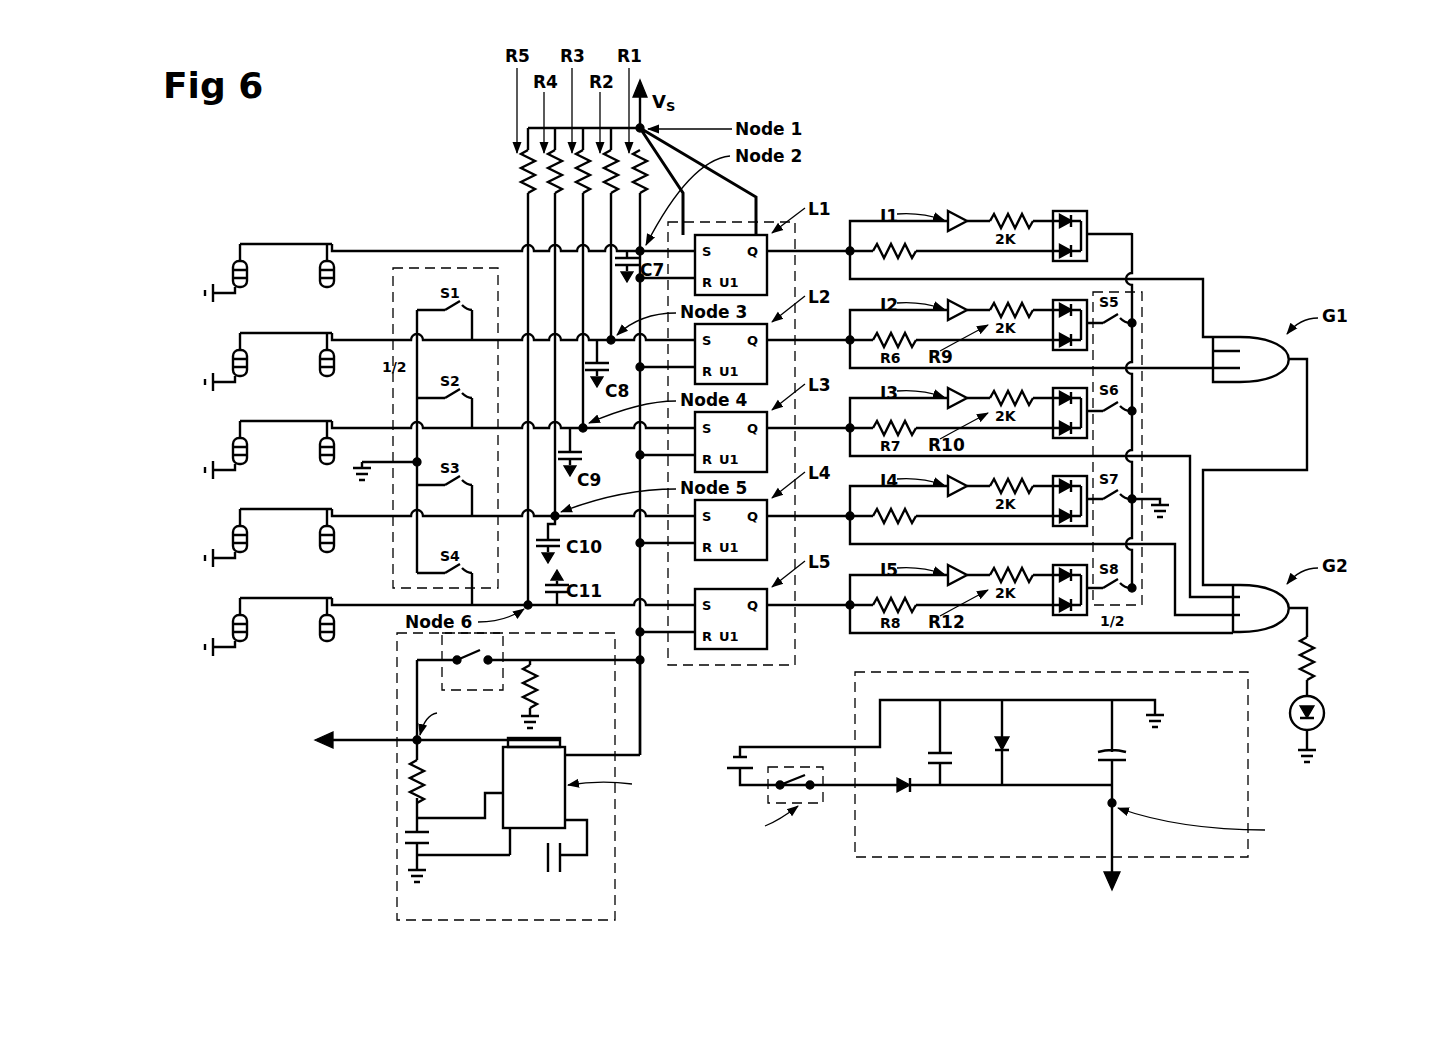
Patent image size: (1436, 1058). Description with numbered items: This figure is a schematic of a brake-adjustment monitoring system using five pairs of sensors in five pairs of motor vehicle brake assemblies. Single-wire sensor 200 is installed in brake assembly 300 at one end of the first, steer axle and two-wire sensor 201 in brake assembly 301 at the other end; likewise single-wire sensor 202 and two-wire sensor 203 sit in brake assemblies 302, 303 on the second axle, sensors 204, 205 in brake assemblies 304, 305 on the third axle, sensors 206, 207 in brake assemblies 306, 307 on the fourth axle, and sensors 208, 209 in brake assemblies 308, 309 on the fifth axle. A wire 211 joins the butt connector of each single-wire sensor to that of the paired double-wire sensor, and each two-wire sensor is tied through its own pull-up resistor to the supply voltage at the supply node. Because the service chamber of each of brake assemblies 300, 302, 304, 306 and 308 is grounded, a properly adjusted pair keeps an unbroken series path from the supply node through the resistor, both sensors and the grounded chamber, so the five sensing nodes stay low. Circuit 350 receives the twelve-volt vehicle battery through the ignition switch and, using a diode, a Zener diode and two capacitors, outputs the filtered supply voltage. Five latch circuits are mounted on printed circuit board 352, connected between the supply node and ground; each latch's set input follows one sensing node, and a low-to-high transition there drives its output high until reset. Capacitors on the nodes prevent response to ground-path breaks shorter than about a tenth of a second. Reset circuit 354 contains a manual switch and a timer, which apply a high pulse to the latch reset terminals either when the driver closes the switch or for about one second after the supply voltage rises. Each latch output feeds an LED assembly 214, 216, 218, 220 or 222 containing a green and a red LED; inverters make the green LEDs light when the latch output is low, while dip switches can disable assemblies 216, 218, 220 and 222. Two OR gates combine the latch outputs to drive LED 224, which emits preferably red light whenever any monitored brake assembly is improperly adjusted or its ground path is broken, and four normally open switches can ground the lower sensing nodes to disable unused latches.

The single-wire sensor 200 is at (252, 268).
The two-wire sensor 201 is at (335, 268).
The single-wire sensor 202 is at (252, 357).
The two-wire sensor 203 is at (335, 357).
The single-wire sensor 204 is at (252, 445).
The two-wire sensor 205 is at (335, 445).
The single-wire sensor 206 is at (252, 533).
The two-wire sensor 207 is at (335, 533).
The single-wire sensor 208 is at (252, 622).
The two-wire sensor 209 is at (335, 622).
The wire 211 is at (238, 245).
The brake assembly 300 is at (230, 270).
The brake assembly 301 is at (332, 290).
The brake assembly 302 is at (230, 359).
The brake assembly 303 is at (332, 379).
The brake assembly 304 is at (230, 447).
The brake assembly 305 is at (332, 467).
The brake assembly 306 is at (230, 535).
The brake assembly 307 is at (332, 555).
The brake assembly 308 is at (230, 624).
The brake assembly 309 is at (332, 644).
The LED assembly 214 is at (1090, 210).
The LED assembly 216 is at (1090, 298).
The LED assembly 218 is at (1090, 386).
The LED assembly 220 is at (1090, 474).
The LED assembly 222 is at (1090, 618).
The LED 224 is at (1327, 707).
The circuit 350 is at (905, 860).
The printed circuit board 352 is at (682, 668).
The reset circuit 354 is at (395, 870).